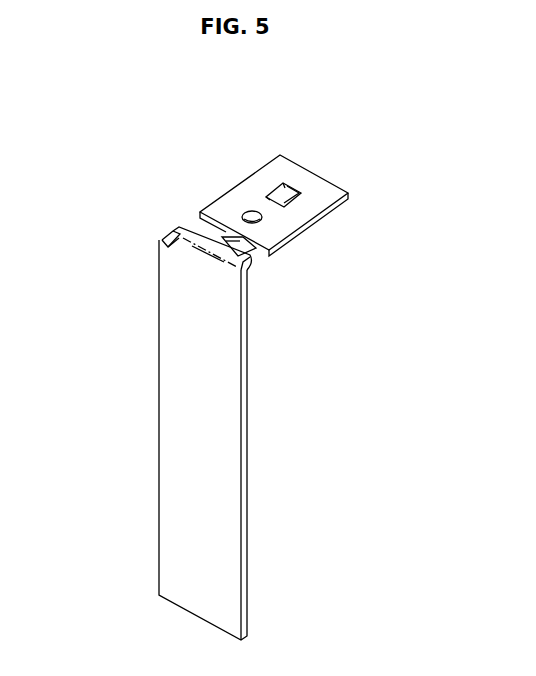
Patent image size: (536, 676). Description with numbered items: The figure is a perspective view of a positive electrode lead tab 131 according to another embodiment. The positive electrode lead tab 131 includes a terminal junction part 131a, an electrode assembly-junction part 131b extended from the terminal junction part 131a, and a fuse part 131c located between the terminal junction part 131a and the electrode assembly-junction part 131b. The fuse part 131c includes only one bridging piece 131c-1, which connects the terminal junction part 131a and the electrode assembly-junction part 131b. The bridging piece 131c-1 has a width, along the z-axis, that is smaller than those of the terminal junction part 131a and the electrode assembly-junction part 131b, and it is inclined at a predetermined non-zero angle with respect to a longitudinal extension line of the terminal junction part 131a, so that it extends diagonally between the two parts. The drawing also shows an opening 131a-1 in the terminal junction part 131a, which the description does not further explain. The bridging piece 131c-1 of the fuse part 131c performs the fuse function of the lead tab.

The positive electrode lead tab 131 is at (296, 149).
The terminal junction part 131a is at (312, 183).
The slot hole 131a-1 is at (277, 188).
The electrode assembly-junction part 131b is at (178, 398).
The fuse part 131c is at (195, 214).
The bridging piece 131c-1 is at (253, 249).